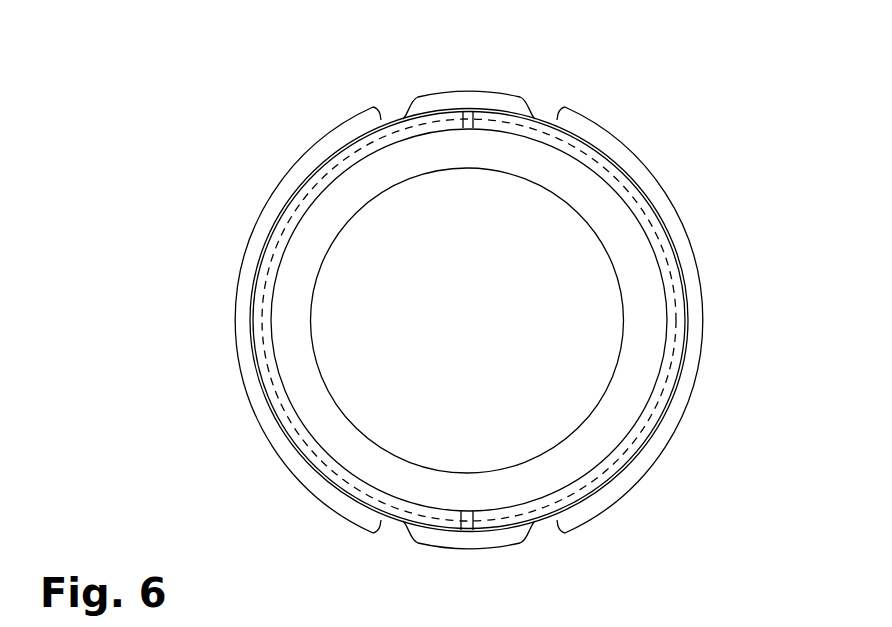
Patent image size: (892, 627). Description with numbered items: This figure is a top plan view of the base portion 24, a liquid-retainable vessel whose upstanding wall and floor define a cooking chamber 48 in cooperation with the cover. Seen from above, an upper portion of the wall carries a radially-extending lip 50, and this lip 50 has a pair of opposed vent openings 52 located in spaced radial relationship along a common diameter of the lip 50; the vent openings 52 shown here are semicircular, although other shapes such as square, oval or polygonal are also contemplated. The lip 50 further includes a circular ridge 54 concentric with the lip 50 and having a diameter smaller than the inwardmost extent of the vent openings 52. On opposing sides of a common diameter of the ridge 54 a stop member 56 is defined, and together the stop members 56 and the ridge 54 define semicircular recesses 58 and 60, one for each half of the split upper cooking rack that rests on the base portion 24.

The base portion 24 is at (707, 371).
The cooking chamber 48 is at (468, 321).
The lip 50 is at (675, 228).
The vent openings 52 is at (398, 118).
The circular ridge 54 is at (270, 387).
The stop member 56 is at (472, 128).
The semicircular recess 58 is at (372, 153).
The semicircular recess 60 is at (622, 180).